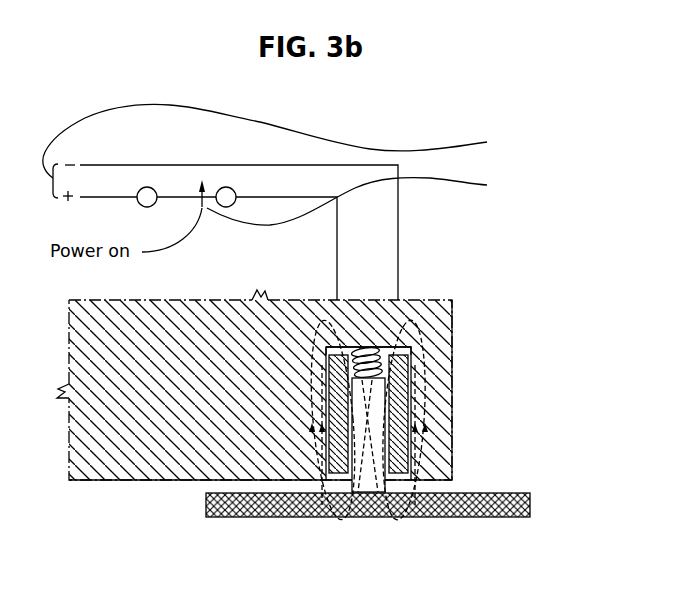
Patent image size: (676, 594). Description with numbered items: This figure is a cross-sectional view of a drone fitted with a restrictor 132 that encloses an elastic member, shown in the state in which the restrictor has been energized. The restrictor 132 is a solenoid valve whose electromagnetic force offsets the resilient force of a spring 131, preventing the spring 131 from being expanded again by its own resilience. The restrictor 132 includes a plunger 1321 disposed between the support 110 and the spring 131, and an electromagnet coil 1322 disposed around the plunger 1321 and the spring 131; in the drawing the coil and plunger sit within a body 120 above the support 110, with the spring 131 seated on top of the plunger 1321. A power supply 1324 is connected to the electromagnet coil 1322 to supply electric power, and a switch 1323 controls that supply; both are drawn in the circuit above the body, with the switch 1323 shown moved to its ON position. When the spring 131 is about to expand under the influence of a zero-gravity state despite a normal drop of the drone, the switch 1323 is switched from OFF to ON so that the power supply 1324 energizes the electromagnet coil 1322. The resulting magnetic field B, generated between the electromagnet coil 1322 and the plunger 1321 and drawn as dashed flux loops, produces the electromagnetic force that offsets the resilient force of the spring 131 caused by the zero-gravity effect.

The support 110 is at (428, 508).
The housing body 120 is at (127, 453).
The spring 131 is at (327, 352).
The restrictor 132 is at (533, 130).
The plunger 1321 is at (409, 340).
The electromagnet coil 1322 is at (380, 432).
The switch 1323 is at (368, 200).
The power supply 1324 is at (286, 141).
The magnetic field B is at (425, 455).